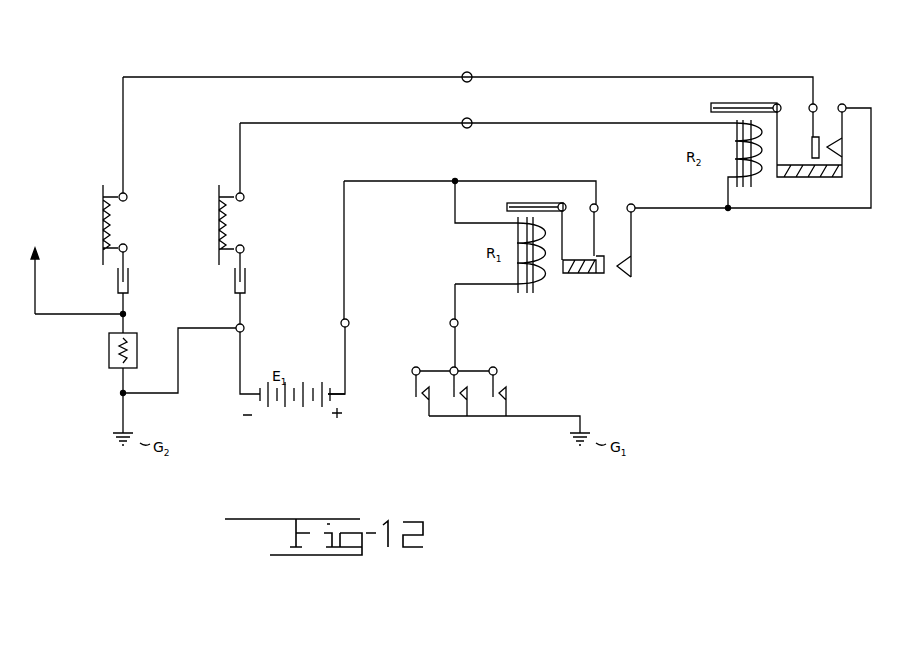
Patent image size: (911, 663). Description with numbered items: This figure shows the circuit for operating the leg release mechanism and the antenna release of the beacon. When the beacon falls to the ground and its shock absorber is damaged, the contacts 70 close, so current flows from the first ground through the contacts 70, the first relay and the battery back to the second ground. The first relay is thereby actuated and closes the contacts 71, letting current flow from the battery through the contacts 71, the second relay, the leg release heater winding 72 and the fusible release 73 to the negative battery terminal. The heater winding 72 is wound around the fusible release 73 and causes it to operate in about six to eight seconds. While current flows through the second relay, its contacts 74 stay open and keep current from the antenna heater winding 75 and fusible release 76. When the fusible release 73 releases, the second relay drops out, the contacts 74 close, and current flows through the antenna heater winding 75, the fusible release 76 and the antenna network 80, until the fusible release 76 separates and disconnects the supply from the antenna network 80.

The contacts 70 is at (497, 395).
The contacts 71 is at (633, 250).
The leg release heater winding 72 is at (224, 222).
The fusible release 73 is at (246, 280).
The contacts 74 is at (842, 128).
The antenna heater winding 75 is at (108, 212).
The fusible release 76 is at (129, 278).
The antenna network 80 is at (104, 350).